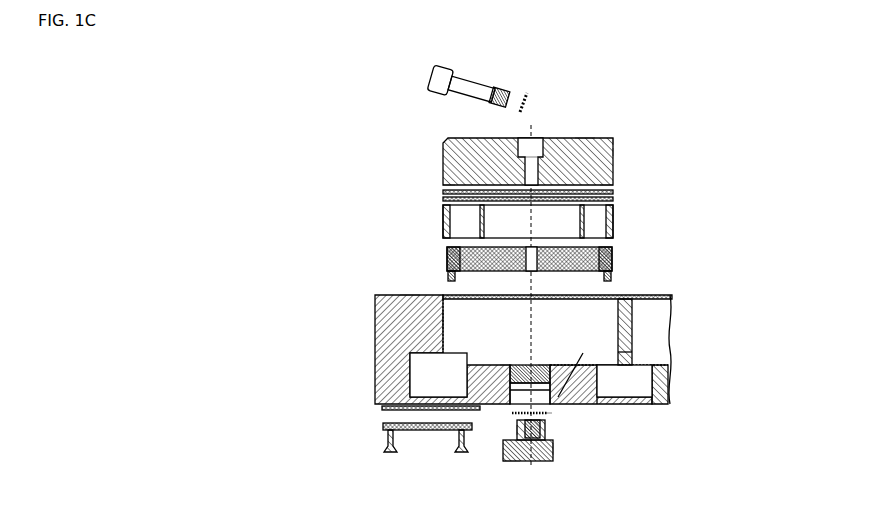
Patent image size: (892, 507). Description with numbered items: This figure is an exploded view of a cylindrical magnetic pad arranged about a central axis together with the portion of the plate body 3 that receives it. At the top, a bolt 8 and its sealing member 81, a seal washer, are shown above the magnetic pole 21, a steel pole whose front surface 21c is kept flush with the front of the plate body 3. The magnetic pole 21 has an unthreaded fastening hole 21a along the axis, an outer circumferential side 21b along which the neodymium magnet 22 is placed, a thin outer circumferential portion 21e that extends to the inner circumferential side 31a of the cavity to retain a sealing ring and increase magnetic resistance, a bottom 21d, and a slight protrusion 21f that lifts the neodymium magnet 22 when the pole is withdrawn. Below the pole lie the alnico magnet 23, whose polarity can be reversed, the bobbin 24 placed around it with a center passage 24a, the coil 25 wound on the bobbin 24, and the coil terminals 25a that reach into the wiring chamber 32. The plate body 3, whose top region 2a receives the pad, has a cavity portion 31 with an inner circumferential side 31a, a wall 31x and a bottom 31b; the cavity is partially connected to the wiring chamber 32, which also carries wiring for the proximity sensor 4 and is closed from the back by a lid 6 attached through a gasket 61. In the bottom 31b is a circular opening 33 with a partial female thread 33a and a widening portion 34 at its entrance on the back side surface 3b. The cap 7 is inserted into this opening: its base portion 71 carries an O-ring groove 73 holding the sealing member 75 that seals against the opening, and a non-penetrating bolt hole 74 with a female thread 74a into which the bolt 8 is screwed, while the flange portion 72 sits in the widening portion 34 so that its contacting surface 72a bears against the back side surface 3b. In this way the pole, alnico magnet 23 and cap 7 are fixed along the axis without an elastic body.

The bolt 8 is at (446, 94).
The sealing member (seal washer) 81 is at (527, 93).
The magnetic pole 21 is at (613, 165).
The fastening hole 21a is at (541, 156).
The outer circumferential side 21b is at (613, 152).
The front surface 21c is at (584, 138).
The bottom 21d is at (448, 186).
The outer circumferential portion 21e is at (613, 141).
The protrusion 21f is at (613, 183).
The proximity sensor 4 is at (613, 196).
The alnico magnet 23 is at (613, 218).
The neodymium magnet 22 is at (611, 236).
The bobbin 24 is at (612, 250).
The coil 25 is at (612, 264).
The terminals 25a is at (610, 280).
The center gap 24a is at (531, 272).
The top of housing 2a is at (406, 295).
The plate body 3 is at (375, 357).
The back side surface 3b is at (505, 364).
The cavity portion 31 is at (527, 326).
The inner circumferential side 31a is at (625, 332).
The bottom 31b is at (478, 363).
The recess wall 31x is at (443, 320).
The wiring chamber 32 is at (441, 386).
The opening 33 is at (551, 367).
The female thread 33a is at (538, 365).
The widening portion 34 is at (579, 370).
The gasket 61 is at (382, 409).
The lid 6 is at (383, 427).
The cap 7 is at (512, 462).
The base portion 71 is at (548, 414).
The flange portion 72 is at (553, 456).
The contacting surface 72a is at (553, 448).
The O-ring groove 73 is at (541, 424).
The bolt hole 74 is at (517, 439).
The female thread 74a is at (517, 428).
The sealing member (O-ring) 75 is at (512, 414).